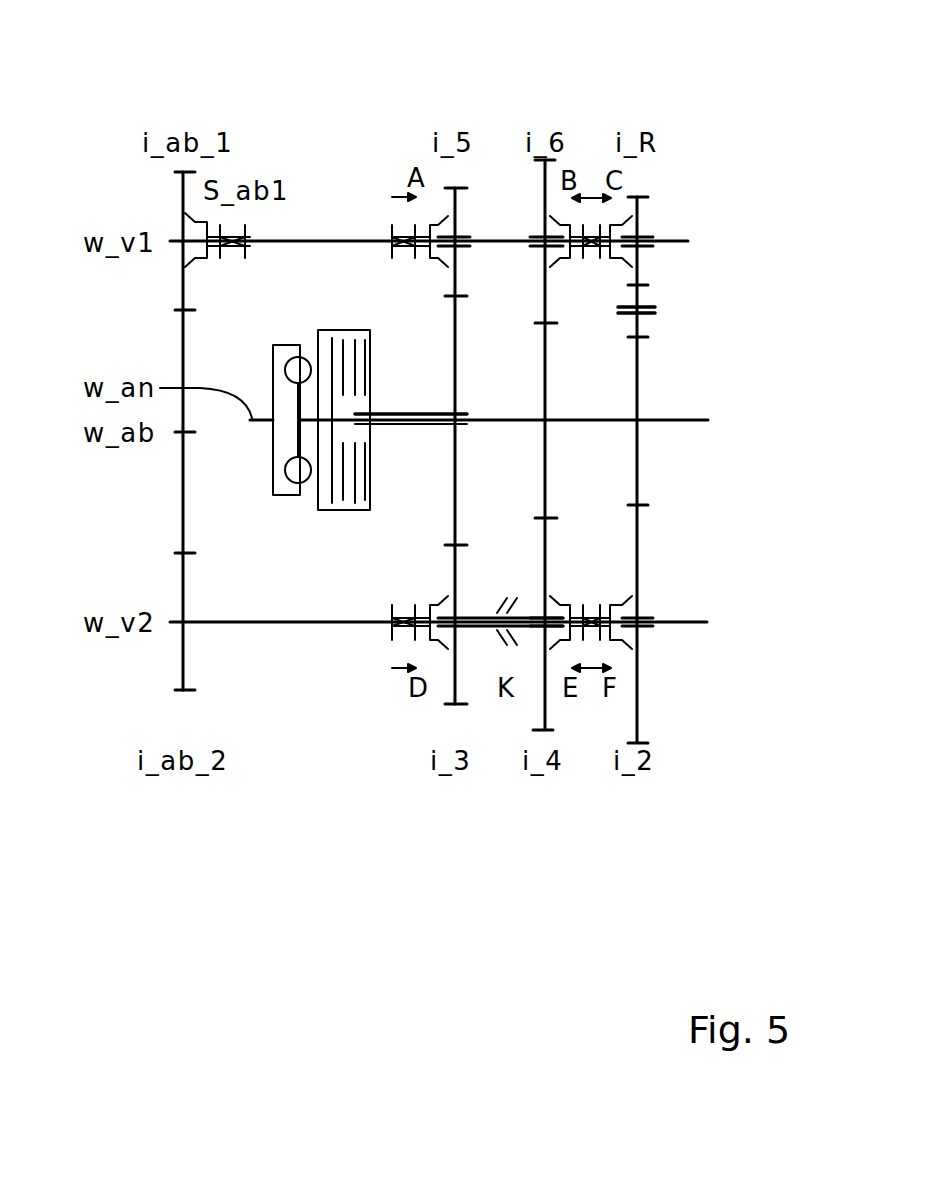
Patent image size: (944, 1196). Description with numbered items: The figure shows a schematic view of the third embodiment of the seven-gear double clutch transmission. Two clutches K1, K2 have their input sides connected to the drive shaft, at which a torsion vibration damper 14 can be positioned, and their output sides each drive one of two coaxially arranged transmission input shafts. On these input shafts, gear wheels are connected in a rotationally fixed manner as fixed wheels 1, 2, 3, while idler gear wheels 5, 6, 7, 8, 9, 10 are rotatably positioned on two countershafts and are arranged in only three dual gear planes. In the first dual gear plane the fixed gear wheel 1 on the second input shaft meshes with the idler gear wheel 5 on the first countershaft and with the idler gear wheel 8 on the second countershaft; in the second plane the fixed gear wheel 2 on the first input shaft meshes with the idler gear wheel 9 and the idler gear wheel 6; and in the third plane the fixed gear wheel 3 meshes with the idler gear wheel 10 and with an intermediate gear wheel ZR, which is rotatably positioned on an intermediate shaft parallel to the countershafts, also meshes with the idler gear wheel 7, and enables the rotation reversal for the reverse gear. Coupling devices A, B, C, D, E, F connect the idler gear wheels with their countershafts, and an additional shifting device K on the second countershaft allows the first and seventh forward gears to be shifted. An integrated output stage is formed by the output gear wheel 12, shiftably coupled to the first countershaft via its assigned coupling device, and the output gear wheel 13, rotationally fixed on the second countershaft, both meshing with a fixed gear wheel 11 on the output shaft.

The fixed gear wheel 1 is at (453, 487).
The fixed gear wheel 2 is at (545, 480).
The fixed gear wheel 3 is at (638, 485).
The idler gear wheel 5 is at (449, 197).
The idler gear wheel 6 is at (545, 210).
The idler gear wheel 7 is at (640, 210).
The idler gear wheel 8 is at (453, 573).
The idler gear wheel 9 is at (543, 685).
The idler gear wheel 10 is at (638, 657).
The fixed gear wheel 11 is at (185, 340).
The output gear wheel 12 is at (183, 197).
The output gear wheel 13 is at (183, 662).
The torsion vibration damper 14 is at (283, 495).
The clutch K1 is at (332, 330).
The clutch K2 is at (358, 330).
The intermediate gear wheel ZR is at (640, 295).